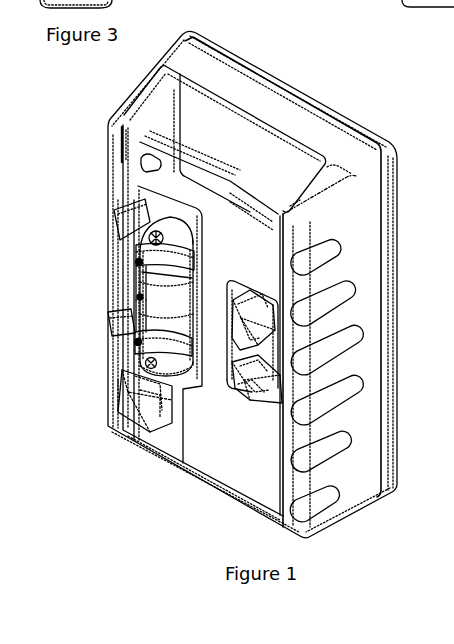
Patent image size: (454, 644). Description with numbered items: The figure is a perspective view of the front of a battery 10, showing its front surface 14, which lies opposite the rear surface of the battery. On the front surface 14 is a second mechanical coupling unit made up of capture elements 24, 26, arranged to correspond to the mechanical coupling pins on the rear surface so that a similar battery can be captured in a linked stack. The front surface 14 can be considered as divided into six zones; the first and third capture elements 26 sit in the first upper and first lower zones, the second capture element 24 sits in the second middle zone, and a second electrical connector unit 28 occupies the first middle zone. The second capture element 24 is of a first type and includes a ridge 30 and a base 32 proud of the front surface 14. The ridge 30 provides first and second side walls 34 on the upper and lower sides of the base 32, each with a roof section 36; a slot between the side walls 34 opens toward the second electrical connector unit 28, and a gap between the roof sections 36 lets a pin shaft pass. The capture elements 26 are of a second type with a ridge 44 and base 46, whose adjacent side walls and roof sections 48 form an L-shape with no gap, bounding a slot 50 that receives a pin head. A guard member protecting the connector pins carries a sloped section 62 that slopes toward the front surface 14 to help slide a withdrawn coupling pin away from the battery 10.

The battery 10 is at (87, 197).
The front surface 14 is at (249, 463).
The second capture element 24 is at (273, 355).
The first and third capture elements 26 is at (138, 186).
The second electrical connector unit 28 is at (160, 315).
The ridge 30 is at (257, 313).
The base 32 is at (272, 367).
The side walls 34 is at (249, 302).
The roof sections 36 is at (255, 380).
The ridge 44 is at (160, 392).
The base 46 is at (139, 162).
The roof sections 48 is at (143, 180).
The slot 50 is at (123, 147).
The sloped section 62 is at (173, 305).